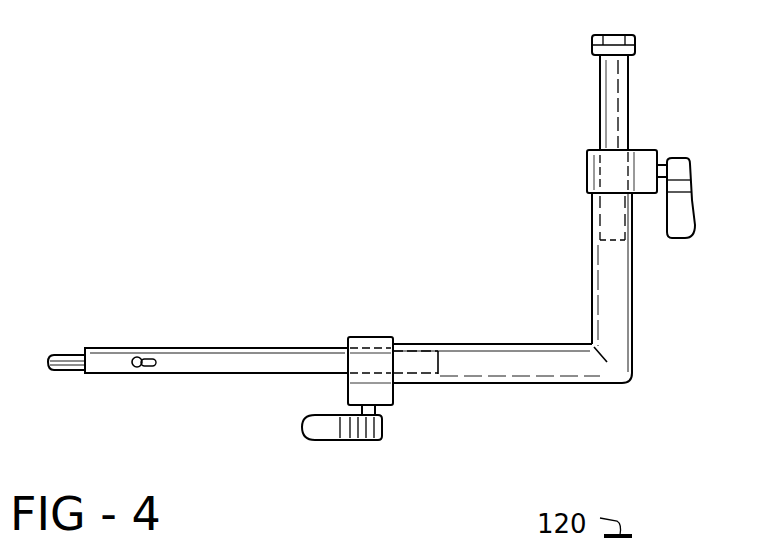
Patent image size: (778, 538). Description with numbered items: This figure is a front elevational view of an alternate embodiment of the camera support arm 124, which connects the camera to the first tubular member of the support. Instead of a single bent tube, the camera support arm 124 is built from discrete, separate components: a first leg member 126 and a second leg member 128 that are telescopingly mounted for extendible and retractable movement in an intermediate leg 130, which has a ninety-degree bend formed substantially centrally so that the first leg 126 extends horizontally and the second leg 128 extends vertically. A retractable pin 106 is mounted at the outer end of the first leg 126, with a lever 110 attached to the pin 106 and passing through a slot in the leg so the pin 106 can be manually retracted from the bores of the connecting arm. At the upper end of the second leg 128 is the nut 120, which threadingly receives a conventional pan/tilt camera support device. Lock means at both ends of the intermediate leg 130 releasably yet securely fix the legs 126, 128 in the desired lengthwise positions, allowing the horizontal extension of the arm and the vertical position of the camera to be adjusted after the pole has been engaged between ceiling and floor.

The pin 106 is at (63, 355).
The lever 110 is at (140, 358).
The nut 120 is at (608, 35).
The camera support arm 124 is at (468, 334).
The first leg member 126 is at (278, 348).
The second leg member 128 is at (608, 113).
The intermediate leg 130 is at (620, 320).